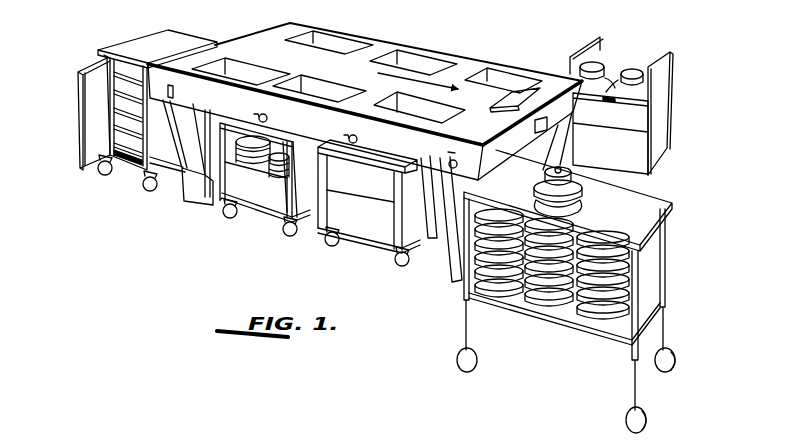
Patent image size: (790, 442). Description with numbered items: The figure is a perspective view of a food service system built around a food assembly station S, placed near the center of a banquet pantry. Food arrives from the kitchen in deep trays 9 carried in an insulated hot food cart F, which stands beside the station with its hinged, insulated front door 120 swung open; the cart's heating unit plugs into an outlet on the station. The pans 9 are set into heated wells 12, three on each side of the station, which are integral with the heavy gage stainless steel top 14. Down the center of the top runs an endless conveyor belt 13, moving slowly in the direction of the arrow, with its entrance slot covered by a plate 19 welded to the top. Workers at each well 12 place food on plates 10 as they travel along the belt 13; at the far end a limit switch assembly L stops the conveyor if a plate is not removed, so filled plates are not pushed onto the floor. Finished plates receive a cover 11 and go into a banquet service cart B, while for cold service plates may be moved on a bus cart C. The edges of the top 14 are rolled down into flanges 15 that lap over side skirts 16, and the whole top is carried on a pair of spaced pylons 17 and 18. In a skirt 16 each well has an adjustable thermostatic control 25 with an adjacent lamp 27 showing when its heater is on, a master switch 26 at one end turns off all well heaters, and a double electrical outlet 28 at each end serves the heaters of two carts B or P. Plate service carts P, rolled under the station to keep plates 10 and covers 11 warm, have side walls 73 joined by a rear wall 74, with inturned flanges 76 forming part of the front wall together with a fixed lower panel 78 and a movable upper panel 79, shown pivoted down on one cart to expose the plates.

The deep trays 9 is at (133, 146).
The plates 10 is at (252, 137).
The plate covers 11 is at (595, 68).
The heated wells 12 is at (254, 75).
The belt 13 is at (282, 53).
The top 14 is at (292, 32).
The flanges 15 is at (437, 137).
The side skirts 16 is at (523, 139).
The pylon 17 is at (192, 165).
The pylon 18 is at (443, 266).
The plate 19 is at (235, 45).
The adjustable thermostatic control 25 is at (487, 181).
The master switch 26 is at (173, 92).
The lamp 27 is at (256, 111).
The double electrical outlet 28 is at (594, 135).
The side walls 73 is at (293, 165).
The rear wall 74 is at (421, 199).
The inturned flanges 76 is at (205, 197).
The fixed lower panel 78 is at (356, 227).
The movable upper panel 79 is at (240, 189).
The insulated front door 120 is at (80, 139).
The hot food cart F is at (147, 40).
The food assembly station S is at (453, 58).
The limit switch assembly L is at (493, 110).
The banquet service cart B is at (657, 105).
The bus cart C is at (668, 228).
The plate service cart P is at (263, 199).